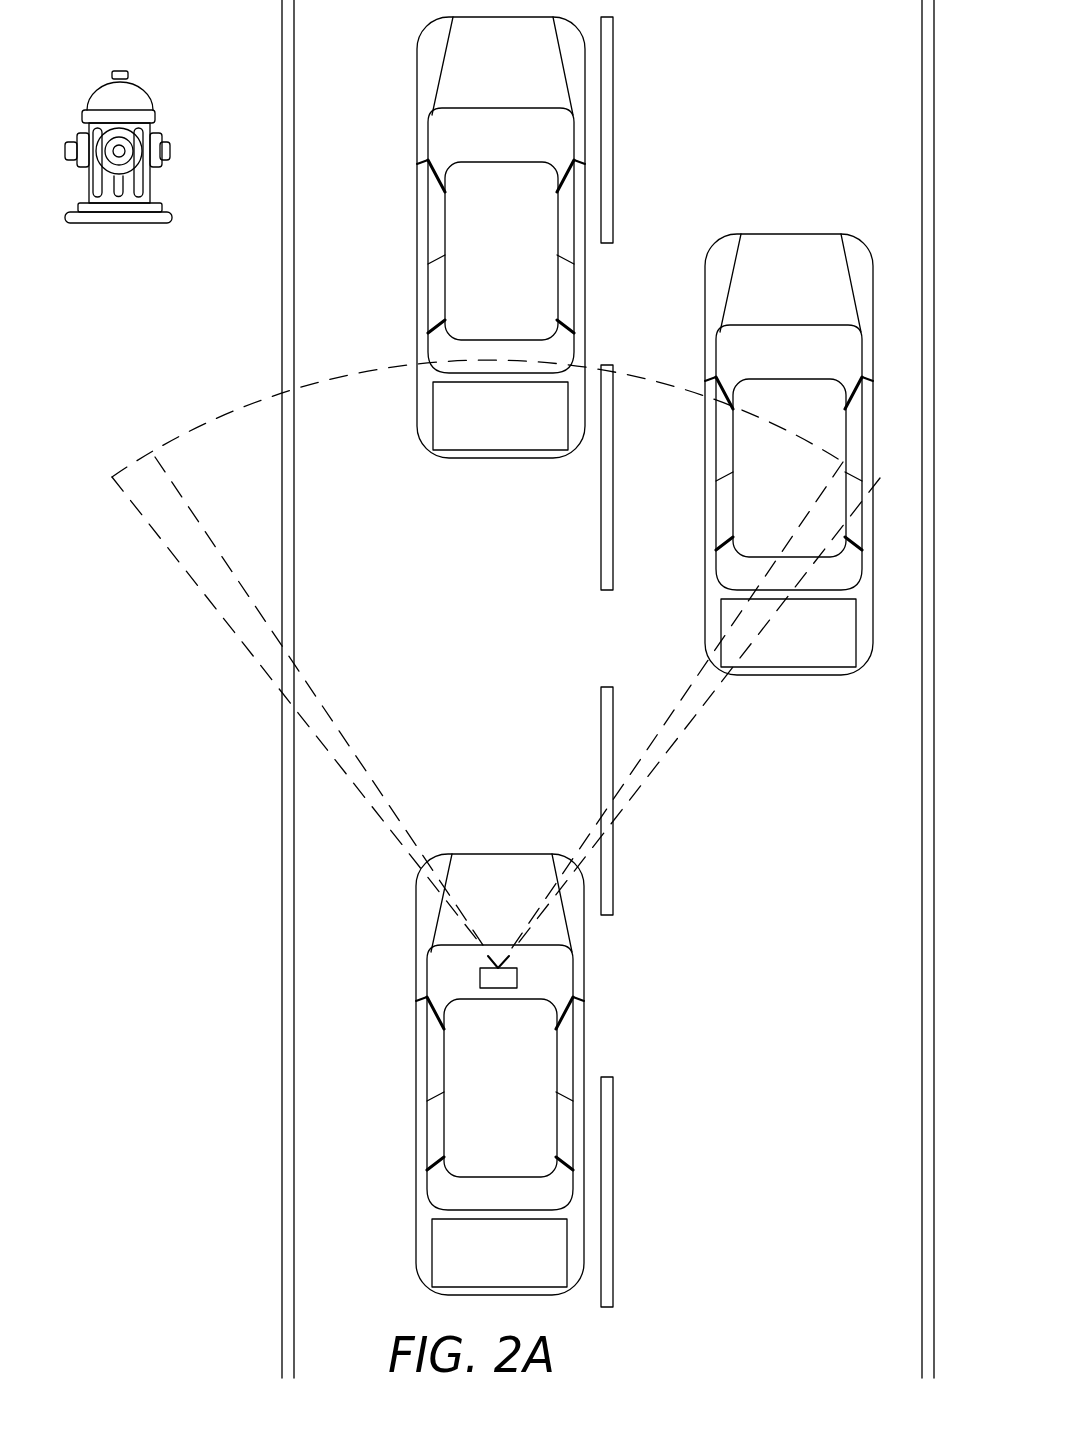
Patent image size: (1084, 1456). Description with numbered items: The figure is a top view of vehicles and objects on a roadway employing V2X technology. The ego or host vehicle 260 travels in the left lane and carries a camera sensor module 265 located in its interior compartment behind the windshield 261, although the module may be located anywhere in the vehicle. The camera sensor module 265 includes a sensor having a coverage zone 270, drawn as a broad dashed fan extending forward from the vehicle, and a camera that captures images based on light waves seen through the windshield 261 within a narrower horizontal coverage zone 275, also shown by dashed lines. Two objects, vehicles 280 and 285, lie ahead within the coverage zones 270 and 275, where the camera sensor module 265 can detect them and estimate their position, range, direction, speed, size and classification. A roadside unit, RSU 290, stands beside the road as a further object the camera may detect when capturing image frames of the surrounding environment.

The vehicle 260 is at (461, 1074).
The windshield 261 is at (459, 971).
The camera sensor module 265 is at (518, 976).
The coverage zone 270 is at (290, 702).
The horizontal coverage zone 275 is at (308, 690).
The vehicle 280 is at (417, 92).
The vehicle 285 is at (705, 300).
The RSU 290 is at (170, 150).